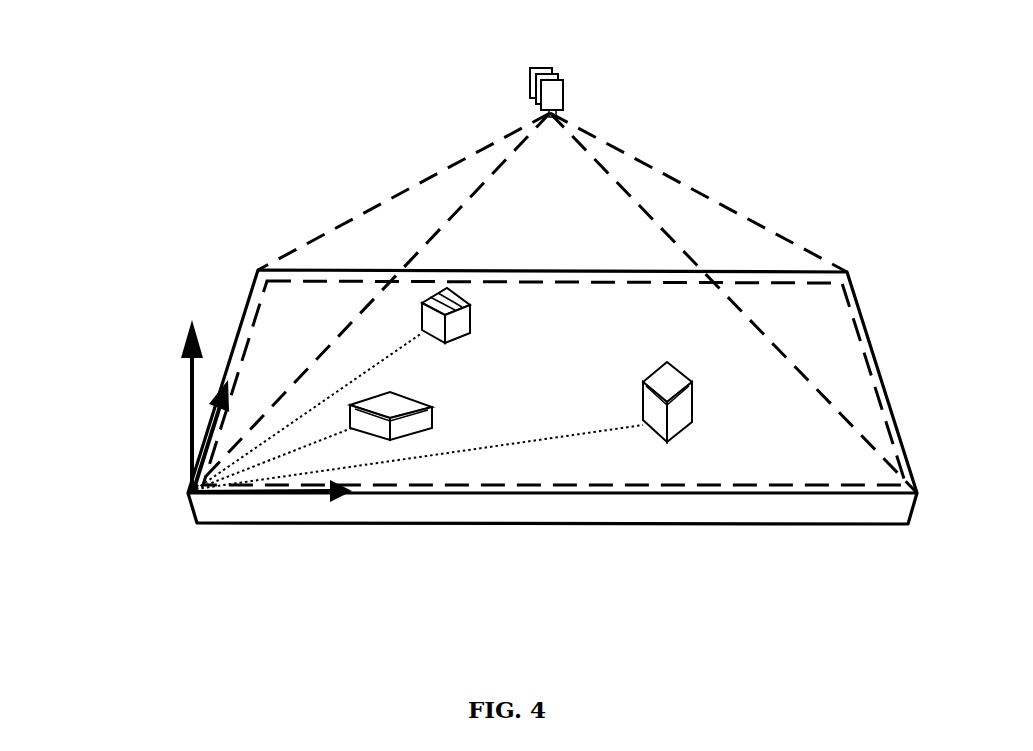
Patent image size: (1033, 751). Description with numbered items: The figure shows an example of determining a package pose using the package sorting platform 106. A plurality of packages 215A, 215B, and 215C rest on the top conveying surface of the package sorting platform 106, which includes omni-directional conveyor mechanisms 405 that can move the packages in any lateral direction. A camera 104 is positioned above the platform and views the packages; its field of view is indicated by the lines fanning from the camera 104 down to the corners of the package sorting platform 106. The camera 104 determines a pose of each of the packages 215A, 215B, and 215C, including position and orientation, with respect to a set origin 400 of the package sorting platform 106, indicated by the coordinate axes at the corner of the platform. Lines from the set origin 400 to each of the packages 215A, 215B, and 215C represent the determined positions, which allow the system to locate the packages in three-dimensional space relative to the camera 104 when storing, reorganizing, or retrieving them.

The camera 104 is at (553, 78).
The package sorting platform 106 is at (785, 66).
The set origin 400 is at (188, 496).
The omni-directional conveyor mechanisms 405 is at (870, 354).
The package 215A is at (458, 304).
The package 215B is at (423, 404).
The package 215C is at (675, 410).